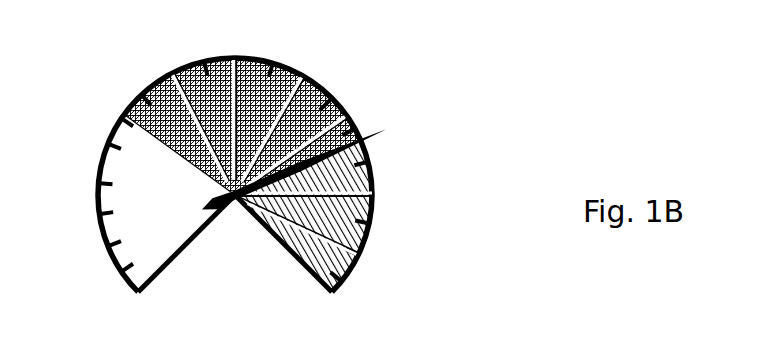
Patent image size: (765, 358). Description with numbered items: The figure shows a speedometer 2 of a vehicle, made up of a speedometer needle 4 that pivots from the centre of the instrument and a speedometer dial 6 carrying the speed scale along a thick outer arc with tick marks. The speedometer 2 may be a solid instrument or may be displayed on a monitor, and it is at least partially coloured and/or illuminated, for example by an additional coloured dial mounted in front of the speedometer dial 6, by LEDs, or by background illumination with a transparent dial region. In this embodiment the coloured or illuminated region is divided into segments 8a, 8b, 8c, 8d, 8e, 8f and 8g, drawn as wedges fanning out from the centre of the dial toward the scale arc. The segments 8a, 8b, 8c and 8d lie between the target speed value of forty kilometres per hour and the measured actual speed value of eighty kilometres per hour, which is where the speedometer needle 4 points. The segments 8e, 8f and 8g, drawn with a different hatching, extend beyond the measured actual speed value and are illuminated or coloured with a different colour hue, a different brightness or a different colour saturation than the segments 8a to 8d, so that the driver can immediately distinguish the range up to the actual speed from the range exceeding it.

The speedometer 2 is at (377, 353).
The speedometer needle 4 is at (386, 129).
The speedometer dial 6 is at (125, 170).
The segment 8a is at (132, 97).
The segment 8b is at (219, 55).
The segment 8c is at (290, 63).
The segment 8d is at (340, 102).
The segment 8e is at (348, 165).
The segment 8f is at (347, 220).
The segment 8g is at (352, 280).